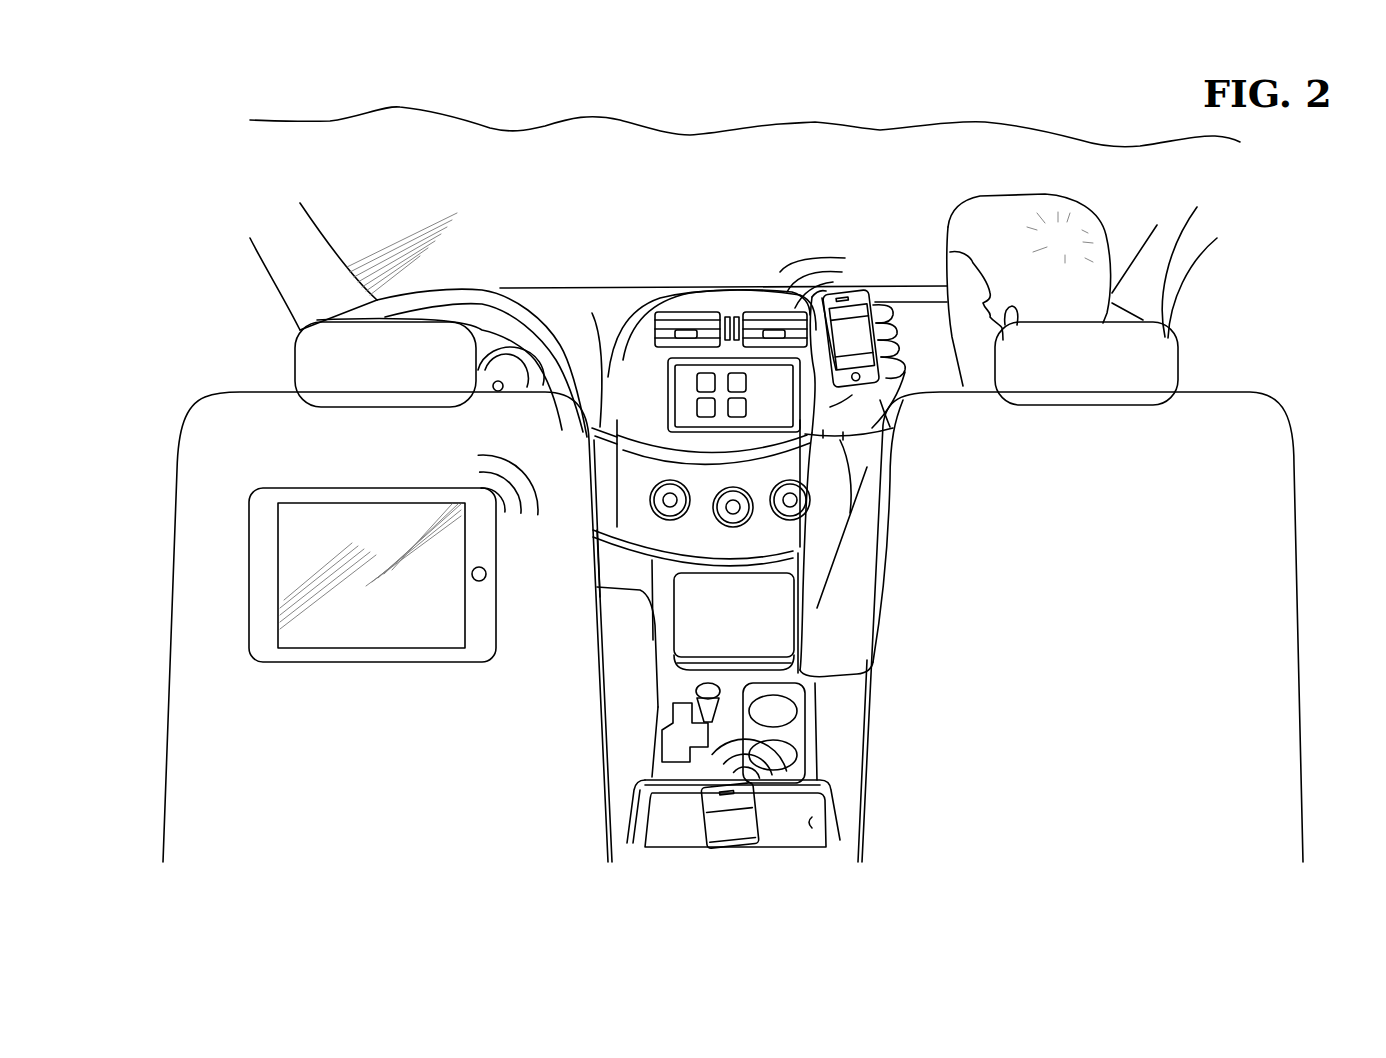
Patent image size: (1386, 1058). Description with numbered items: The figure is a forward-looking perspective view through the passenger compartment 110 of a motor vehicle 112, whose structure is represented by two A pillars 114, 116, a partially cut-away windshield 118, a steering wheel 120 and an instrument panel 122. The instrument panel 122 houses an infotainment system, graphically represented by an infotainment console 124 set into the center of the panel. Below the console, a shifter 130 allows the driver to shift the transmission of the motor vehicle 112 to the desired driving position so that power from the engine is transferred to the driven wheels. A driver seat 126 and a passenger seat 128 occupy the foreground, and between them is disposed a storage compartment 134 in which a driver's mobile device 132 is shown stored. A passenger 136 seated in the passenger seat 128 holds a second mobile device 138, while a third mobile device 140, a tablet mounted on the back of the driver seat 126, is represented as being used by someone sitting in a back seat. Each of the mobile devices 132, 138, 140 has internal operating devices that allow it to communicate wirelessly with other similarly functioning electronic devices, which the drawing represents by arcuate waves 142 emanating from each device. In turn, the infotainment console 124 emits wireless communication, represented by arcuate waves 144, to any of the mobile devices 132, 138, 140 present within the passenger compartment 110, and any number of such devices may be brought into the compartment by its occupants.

The passenger compartment 110 is at (1027, 672).
The motor vehicle 112 is at (1186, 274).
The A pillar 114 is at (1150, 240).
The A pillar 116 is at (320, 236).
The windshield 118 is at (815, 122).
The steering wheel 120 is at (507, 320).
The instrument panel 122 is at (592, 313).
The infotainment console 124 is at (668, 397).
The driver seat 126 is at (175, 492).
The passenger seat 128 is at (1299, 621).
The shifter 130 is at (692, 692).
The driver's mobile device 132 is at (650, 828).
The storage compartment 134 is at (814, 826).
The passenger 136 is at (1178, 225).
The second mobile device 138 is at (868, 290).
The third mobile device 140 is at (383, 654).
The wireless signal 142 is at (845, 258).
The arcuate waves 144 is at (623, 360).